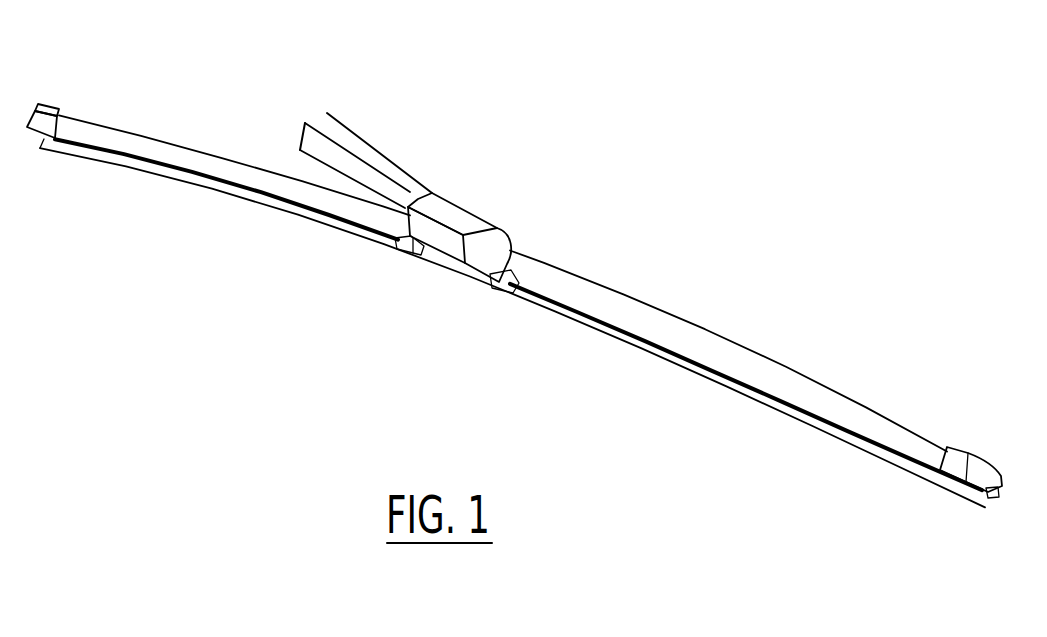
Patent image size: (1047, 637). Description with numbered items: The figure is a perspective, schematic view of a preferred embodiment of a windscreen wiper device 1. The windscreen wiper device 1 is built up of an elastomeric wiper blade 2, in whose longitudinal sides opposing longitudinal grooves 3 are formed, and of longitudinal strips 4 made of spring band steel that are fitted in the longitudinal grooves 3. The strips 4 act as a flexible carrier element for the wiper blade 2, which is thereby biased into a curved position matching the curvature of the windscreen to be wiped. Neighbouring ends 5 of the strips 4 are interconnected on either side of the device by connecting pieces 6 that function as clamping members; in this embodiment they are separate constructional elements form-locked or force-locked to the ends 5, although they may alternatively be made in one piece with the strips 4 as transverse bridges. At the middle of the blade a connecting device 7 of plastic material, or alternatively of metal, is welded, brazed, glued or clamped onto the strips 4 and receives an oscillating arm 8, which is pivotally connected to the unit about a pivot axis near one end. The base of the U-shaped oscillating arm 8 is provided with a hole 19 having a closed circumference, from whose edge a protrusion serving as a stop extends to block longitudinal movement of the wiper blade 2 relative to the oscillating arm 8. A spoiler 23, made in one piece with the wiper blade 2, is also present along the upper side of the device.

The windscreen wiper device 1 is at (668, 145).
The wiper blade 2 is at (617, 337).
The longitudinal grooves 3 is at (700, 368).
The longitudinal strips 4 is at (555, 303).
The ends 5 is at (990, 492).
The connecting pieces 6 is at (47, 113).
The connecting device 7 is at (415, 284).
The oscillating arm 8 is at (415, 185).
The hole 19 is at (159, 152).
The spoiler 23 is at (660, 330).